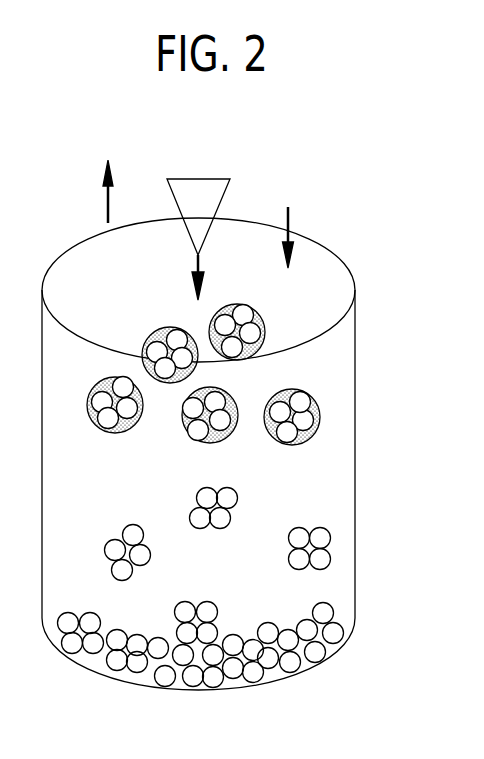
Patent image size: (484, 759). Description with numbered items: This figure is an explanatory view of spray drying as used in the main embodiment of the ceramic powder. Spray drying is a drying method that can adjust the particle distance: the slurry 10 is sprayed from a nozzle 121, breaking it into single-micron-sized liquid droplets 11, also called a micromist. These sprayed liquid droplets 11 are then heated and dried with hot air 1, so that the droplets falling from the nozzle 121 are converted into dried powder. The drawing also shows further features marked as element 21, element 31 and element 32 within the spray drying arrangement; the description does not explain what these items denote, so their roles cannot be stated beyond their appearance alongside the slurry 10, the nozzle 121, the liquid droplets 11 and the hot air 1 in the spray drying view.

The hot air 1 is at (292, 221).
The slurry 10 is at (200, 265).
The nozzle 121 is at (193, 178).
The discharged gas / solvent 32 is at (108, 180).
The particles 21 is at (302, 402).
The liquid droplets 11 is at (328, 398).
The binder / dispersion medium 31 is at (310, 440).